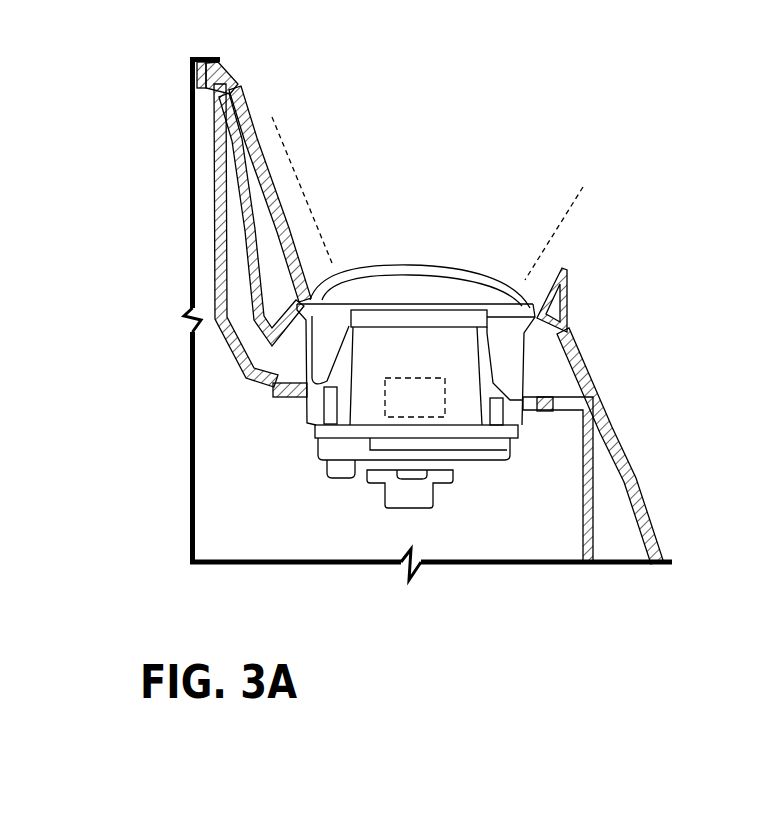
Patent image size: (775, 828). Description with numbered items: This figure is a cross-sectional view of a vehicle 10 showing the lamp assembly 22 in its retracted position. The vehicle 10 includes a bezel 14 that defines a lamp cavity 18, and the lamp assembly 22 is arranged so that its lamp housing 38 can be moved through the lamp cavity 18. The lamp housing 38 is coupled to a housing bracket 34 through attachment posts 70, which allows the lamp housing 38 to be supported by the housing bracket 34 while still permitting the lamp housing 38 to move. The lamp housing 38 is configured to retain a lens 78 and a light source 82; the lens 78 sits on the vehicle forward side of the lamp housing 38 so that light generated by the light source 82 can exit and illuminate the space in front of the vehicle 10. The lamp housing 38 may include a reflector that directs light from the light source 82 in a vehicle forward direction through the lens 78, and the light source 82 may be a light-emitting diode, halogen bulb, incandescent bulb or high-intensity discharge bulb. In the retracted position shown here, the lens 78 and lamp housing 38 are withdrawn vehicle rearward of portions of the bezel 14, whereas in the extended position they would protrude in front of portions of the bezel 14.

The vehicle 10 is at (634, 429).
The bezel 14 is at (272, 208).
The lamp cavity 18 is at (397, 248).
The lamp assembly 22 is at (552, 255).
The housing bracket 34 is at (506, 453).
The lamp housing 38 is at (508, 353).
The attachment posts 70 is at (327, 410).
The lens 78 is at (458, 273).
The light source 82 is at (397, 402).